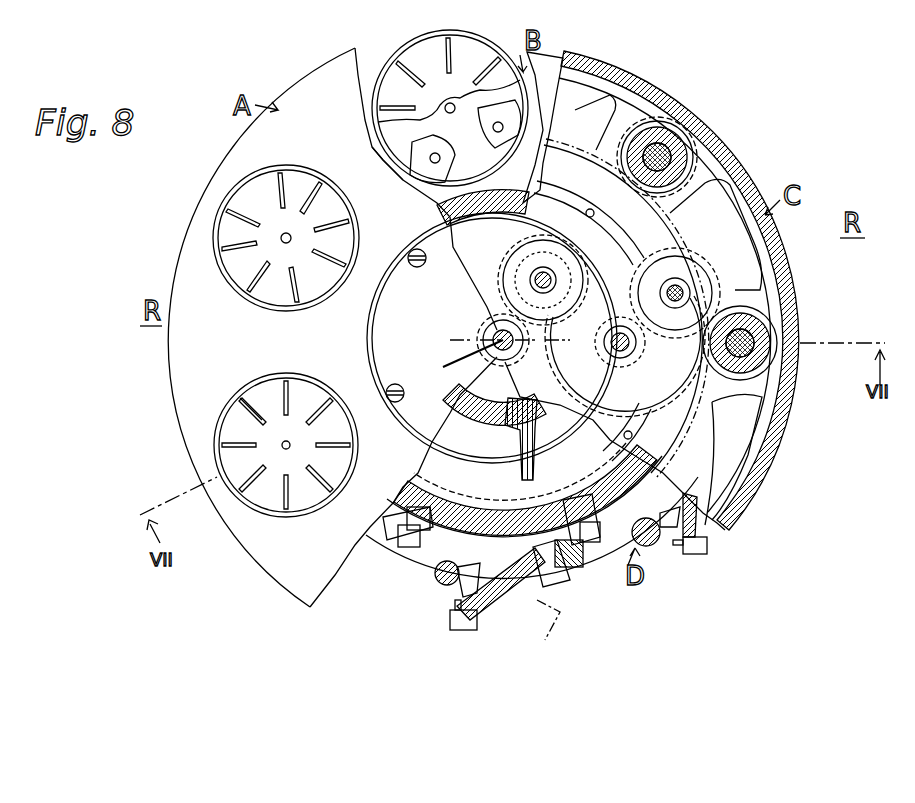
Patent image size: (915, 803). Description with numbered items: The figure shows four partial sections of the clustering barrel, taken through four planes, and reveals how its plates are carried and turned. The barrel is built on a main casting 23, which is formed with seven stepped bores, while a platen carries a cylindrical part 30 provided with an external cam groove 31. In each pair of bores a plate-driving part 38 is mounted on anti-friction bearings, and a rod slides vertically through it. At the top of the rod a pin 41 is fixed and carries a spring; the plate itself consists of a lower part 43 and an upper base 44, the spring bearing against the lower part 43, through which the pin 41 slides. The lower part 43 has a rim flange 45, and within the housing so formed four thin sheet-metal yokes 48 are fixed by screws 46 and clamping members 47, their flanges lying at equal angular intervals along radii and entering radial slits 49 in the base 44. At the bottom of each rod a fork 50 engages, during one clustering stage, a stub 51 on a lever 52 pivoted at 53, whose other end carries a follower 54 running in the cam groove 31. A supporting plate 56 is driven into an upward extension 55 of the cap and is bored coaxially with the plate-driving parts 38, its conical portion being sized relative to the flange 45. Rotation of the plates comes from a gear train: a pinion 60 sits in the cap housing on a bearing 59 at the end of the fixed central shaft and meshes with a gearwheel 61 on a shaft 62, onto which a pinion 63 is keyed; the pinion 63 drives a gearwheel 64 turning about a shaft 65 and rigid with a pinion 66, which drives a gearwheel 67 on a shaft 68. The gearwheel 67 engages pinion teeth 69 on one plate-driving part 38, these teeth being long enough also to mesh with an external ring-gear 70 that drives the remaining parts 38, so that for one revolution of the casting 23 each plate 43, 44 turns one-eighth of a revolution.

The main casting 23 is at (500, 430).
The cylindrical part 30 is at (468, 505).
The external cam groove 31 is at (524, 490).
The plate-driving part 38 is at (672, 160).
The pin 41 is at (292, 238).
The lower part 43 is at (400, 165).
The upper base 44 is at (310, 520).
The rim flange 45 is at (388, 62).
The screws 46 is at (438, 152).
The clamping members 47 is at (494, 135).
The yokes 48 is at (500, 102).
The radial slits 49 is at (262, 400).
The fork 50 is at (478, 585).
The stub 51 is at (452, 612).
The lever 52 is at (485, 600).
The pivot 53 is at (555, 595).
The follower 54 is at (585, 510).
The upward extension 55 is at (466, 200).
The supporting plate 56 is at (185, 385).
The bearing 59 is at (495, 335).
The pinion 60 is at (490, 360).
The gearwheel 61 is at (520, 235).
The shaft 62 is at (545, 272).
The pinion 63 is at (533, 264).
The gearwheel 64 is at (625, 377).
The shaft 65 is at (612, 336).
The pinion 66 is at (628, 362).
The gearwheel 67 is at (694, 268).
The shaft 68 is at (682, 290).
The pinion teeth 69 is at (760, 328).
The external ring-gear 70 is at (700, 416).